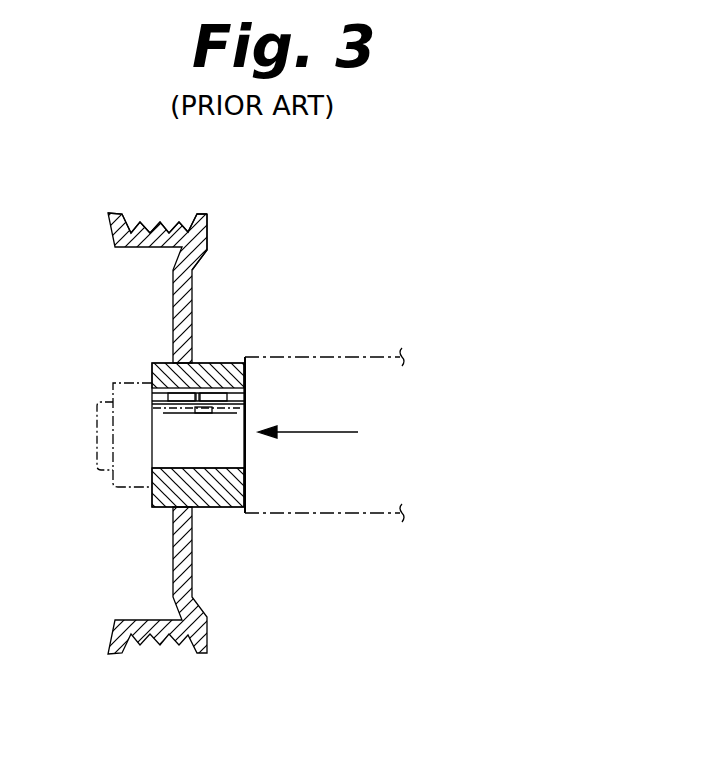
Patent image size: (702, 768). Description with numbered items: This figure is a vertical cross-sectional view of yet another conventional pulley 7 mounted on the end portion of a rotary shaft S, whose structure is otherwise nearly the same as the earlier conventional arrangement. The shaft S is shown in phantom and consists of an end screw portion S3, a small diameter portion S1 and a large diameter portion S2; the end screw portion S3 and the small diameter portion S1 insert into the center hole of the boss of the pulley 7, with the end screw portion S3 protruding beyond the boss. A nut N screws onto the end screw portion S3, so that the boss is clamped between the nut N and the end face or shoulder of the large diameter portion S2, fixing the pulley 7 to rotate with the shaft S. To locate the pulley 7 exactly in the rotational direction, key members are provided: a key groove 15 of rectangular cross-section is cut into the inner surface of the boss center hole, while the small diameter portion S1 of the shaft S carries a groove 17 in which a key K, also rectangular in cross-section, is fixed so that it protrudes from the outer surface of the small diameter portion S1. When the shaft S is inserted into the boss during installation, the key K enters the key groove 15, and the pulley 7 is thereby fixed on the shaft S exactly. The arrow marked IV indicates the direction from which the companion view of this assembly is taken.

The pulley 7 is at (220, 231).
The key groove 15 is at (245, 393).
The groove 17 is at (195, 413).
The key K is at (212, 413).
The nut N is at (118, 383).
The rotary shaft S is at (333, 532).
The small diameter portion S1 is at (217, 460).
The large diameter portion S2 is at (342, 377).
The end screw portion S3 is at (107, 457).
The viewing direction IV is at (323, 432).